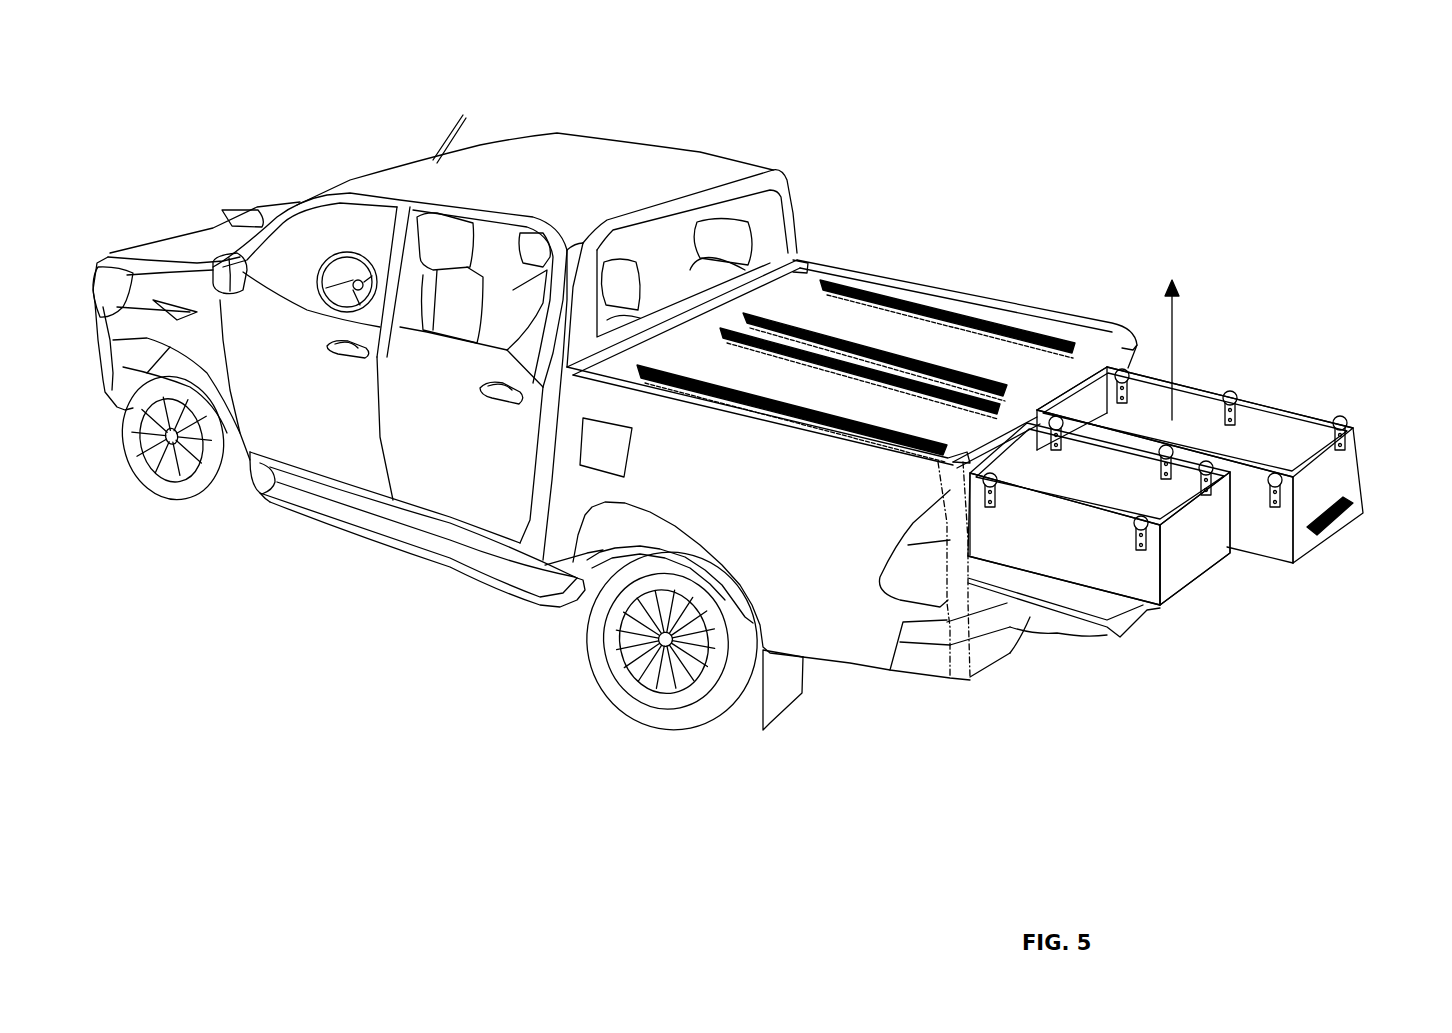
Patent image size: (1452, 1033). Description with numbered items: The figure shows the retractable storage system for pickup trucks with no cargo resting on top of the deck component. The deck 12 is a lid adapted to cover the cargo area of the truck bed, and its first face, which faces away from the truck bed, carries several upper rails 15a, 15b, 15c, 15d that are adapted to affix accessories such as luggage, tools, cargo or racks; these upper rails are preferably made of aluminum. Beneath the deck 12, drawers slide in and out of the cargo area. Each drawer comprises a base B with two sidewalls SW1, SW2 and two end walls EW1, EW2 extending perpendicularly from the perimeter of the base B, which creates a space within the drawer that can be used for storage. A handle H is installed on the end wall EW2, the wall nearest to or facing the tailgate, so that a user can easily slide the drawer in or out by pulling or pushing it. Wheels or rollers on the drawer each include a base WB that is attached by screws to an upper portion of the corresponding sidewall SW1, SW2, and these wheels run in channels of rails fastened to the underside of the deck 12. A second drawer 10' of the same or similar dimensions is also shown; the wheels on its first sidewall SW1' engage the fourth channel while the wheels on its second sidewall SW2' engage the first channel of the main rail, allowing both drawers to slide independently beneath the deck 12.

The deck 12 is at (918, 327).
The upper rail 15a is at (707, 383).
The upper rail 15b is at (780, 333).
The upper rail 15c is at (857, 338).
The upper rail 15d is at (1008, 322).
The end wall EW1 is at (1080, 403).
The end wall EW2 is at (1338, 473).
The first sidewall SW1 is at (1230, 340).
The second sidewall SW2 is at (1188, 418).
The base of wheel or roller WB is at (1226, 392).
The base B is at (1170, 327).
The handle H is at (1318, 537).
The second drawer 10' is at (1108, 560).
The first sidewall of second drawer SW1' is at (1064, 602).
The second sidewall of second drawer SW2' is at (1151, 609).